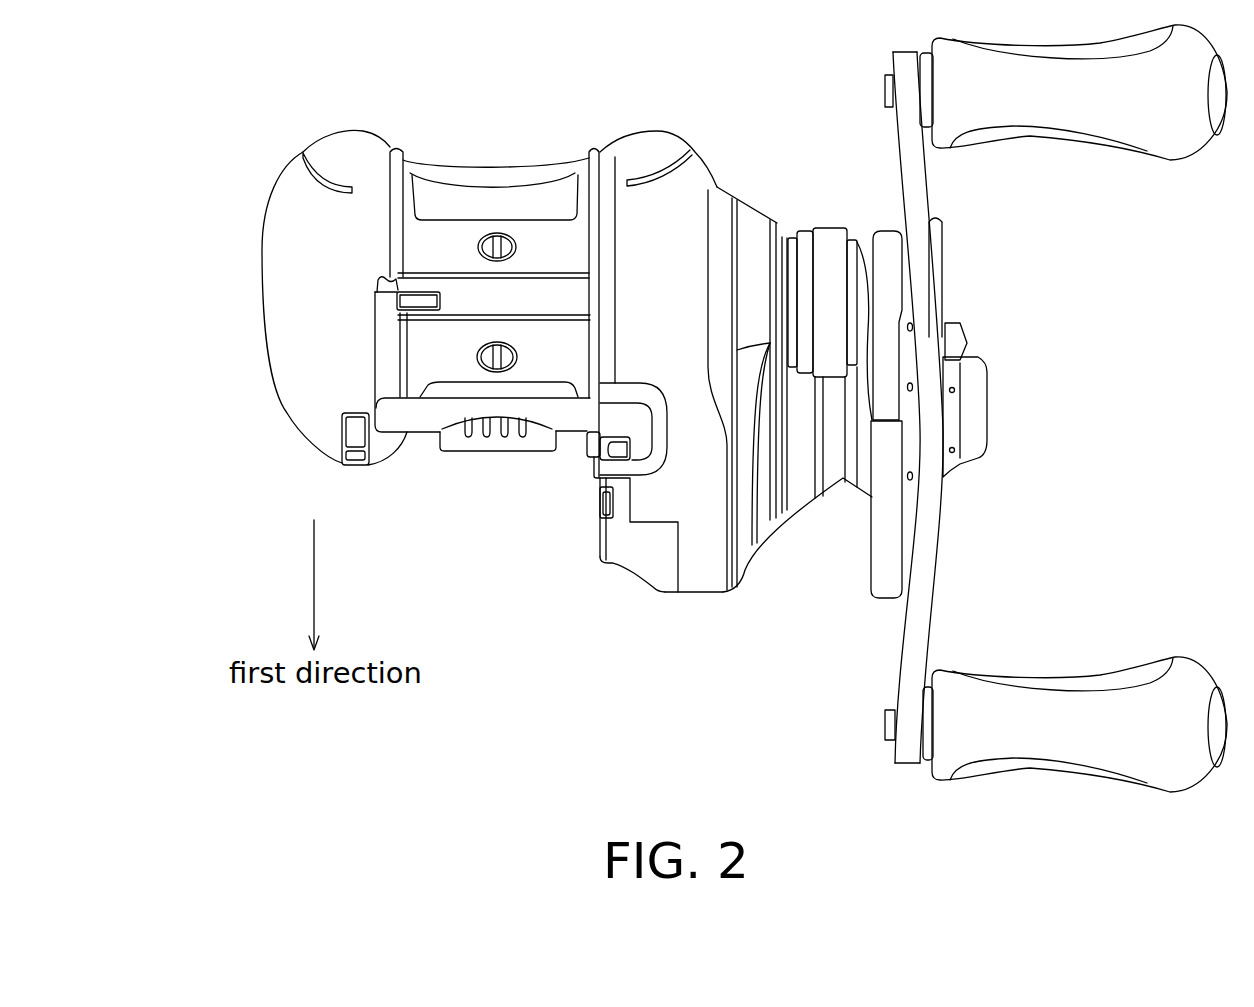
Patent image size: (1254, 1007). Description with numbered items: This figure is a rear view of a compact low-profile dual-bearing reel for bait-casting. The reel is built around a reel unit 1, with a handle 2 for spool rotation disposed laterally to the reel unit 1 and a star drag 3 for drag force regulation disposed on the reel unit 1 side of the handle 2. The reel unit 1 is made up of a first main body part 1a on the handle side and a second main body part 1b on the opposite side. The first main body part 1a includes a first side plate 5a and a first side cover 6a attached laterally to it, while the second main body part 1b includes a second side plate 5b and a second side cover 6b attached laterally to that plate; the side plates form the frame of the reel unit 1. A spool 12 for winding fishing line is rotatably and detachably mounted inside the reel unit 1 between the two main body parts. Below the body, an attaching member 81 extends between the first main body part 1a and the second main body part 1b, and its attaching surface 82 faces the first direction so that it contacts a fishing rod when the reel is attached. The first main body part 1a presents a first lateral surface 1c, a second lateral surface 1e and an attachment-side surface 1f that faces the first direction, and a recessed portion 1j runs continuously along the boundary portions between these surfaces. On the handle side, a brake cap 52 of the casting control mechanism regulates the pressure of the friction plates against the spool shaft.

The reel unit 1 is at (295, 133).
The first main body part 1a is at (678, 126).
The second main body part 1b is at (328, 130).
The first lateral surface 1c is at (597, 535).
The second lateral surface 1e is at (753, 557).
The attachment-side surface 1f is at (698, 594).
The recessed portion 1j is at (642, 570).
The handle 2 is at (927, 192).
The star drag 3 is at (882, 231).
The first side plate 5a is at (620, 170).
The second side plate 5b is at (360, 130).
The first side cover 6a is at (745, 572).
The second side cover 6b is at (260, 253).
The spool 12 is at (428, 357).
The brake cap 52 is at (830, 235).
The attaching member 81 is at (453, 458).
The attaching surface 82 is at (497, 451).